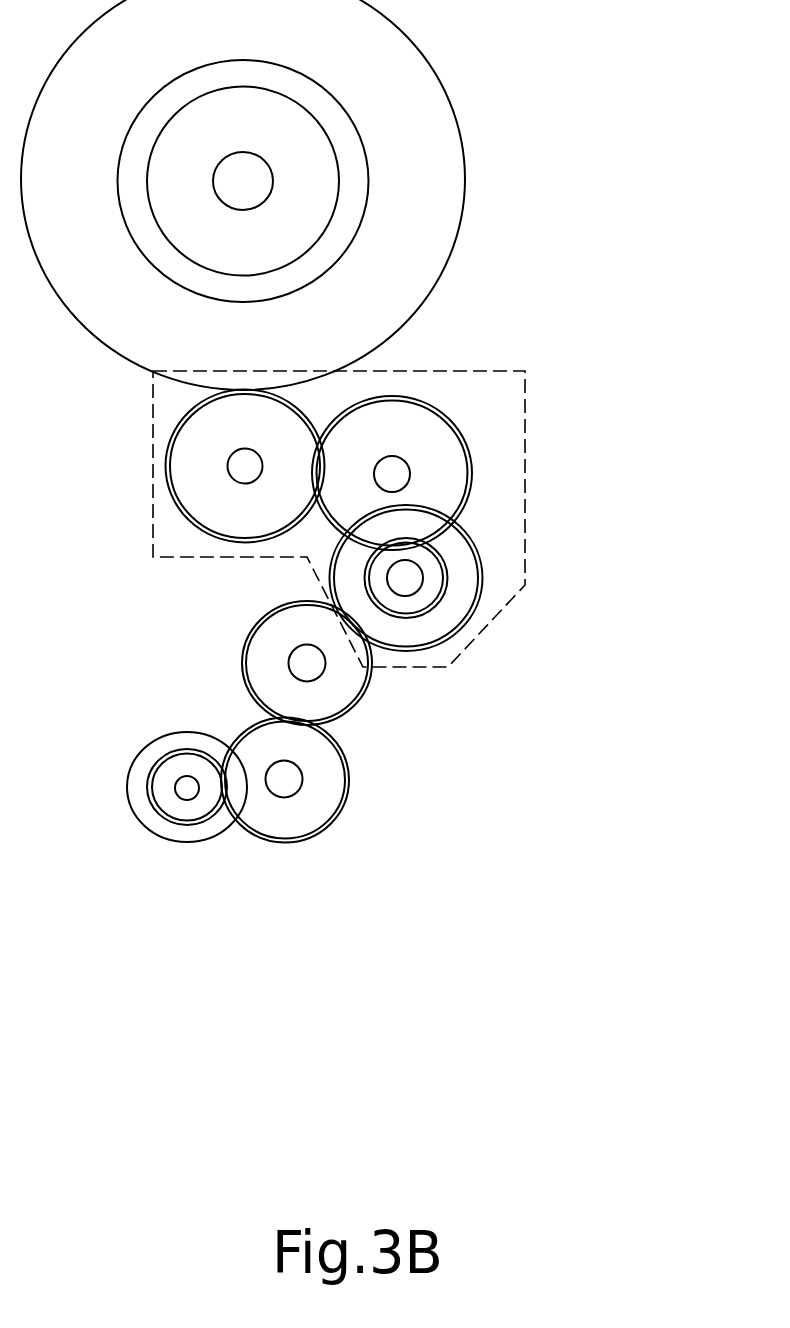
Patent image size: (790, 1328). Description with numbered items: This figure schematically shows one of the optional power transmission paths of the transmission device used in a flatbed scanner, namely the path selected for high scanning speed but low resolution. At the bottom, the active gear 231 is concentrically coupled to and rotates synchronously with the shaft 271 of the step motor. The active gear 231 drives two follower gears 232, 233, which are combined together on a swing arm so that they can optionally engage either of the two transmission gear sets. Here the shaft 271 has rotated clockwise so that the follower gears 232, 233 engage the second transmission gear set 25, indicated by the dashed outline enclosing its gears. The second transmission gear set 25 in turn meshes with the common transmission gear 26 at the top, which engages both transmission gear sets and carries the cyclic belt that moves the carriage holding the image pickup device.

The common transmission gear 26 is at (432, 200).
The second transmission gear set 25 is at (510, 463).
The follower gear 233 is at (355, 683).
The follower gear 232 is at (333, 760).
The active gear 231 is at (188, 782).
The shaft 271 is at (195, 793).